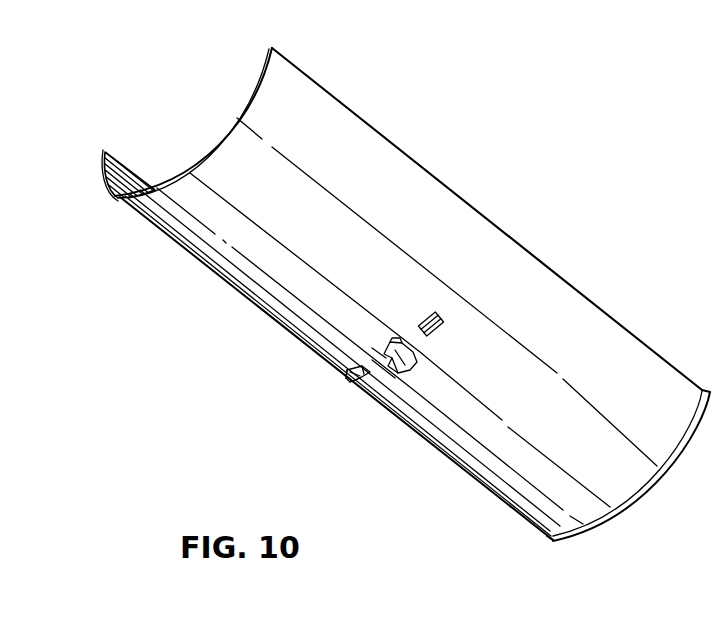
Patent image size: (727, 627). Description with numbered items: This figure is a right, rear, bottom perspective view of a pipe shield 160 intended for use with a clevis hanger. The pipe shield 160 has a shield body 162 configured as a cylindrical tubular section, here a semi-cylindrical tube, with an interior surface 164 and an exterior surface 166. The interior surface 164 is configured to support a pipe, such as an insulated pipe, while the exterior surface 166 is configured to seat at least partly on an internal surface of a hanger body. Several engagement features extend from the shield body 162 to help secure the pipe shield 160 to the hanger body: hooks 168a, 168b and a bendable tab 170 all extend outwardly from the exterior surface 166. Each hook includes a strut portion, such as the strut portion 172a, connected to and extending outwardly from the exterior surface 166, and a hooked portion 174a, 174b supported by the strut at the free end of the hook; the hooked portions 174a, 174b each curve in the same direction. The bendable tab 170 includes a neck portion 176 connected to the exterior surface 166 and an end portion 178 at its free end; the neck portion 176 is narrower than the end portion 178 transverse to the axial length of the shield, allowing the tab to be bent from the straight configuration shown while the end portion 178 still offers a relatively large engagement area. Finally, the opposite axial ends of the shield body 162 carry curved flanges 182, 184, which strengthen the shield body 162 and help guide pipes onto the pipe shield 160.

The pipe shield 160 is at (97, 49).
The shield body 162 is at (402, 130).
The interior surface 164 is at (125, 187).
The exterior surface 166 is at (185, 253).
The hook 168a is at (320, 374).
The hook 168b is at (430, 300).
The bendable tab 170 is at (415, 352).
The strut portion 172a is at (347, 372).
The hooked portion 174a is at (350, 381).
The hooked portion 174b is at (405, 357).
The neck portion 176 is at (385, 352).
The end portion 178 is at (381, 368).
The curved flange 182 is at (113, 196).
The curved flange 184 is at (613, 520).